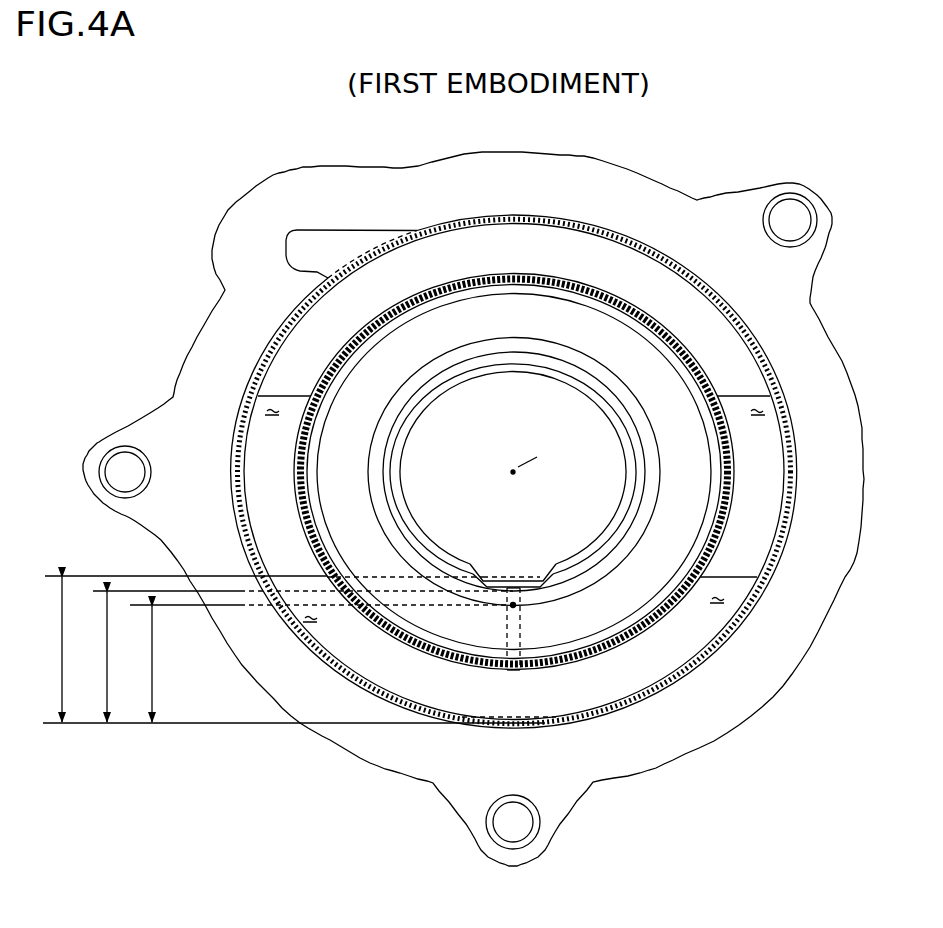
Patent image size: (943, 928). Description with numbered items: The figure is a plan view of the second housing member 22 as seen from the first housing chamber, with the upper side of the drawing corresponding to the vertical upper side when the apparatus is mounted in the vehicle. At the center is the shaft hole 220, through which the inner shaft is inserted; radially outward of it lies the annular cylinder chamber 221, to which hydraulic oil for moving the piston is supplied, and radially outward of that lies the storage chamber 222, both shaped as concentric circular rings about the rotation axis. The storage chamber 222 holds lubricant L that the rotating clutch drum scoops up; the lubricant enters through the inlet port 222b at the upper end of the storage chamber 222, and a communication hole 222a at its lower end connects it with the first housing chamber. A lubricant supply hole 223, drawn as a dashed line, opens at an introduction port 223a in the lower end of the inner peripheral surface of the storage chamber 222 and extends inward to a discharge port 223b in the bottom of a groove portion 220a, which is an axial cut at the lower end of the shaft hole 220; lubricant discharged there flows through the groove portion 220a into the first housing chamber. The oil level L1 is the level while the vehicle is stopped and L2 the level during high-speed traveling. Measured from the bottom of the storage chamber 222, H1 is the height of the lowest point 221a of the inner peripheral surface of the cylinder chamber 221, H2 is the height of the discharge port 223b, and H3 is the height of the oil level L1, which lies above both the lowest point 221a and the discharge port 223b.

The second housing member 22 is at (618, 163).
The storage chamber 222 is at (493, 252).
The communication hole 222a is at (546, 720).
The inlet port 222b is at (290, 247).
The cylinder chamber 221 is at (493, 318).
The lowest point of the inner peripheral surface of the cylinder chamber 221a is at (509, 606).
The shaft hole 220 is at (493, 412).
The groove portion 220a is at (534, 566).
The lubricant supply hole 223 is at (522, 635).
The introduction port 223a is at (515, 672).
The discharge port 223b is at (513, 586).
The lubricant L is at (693, 640).
The oil level while stopped L1 is at (725, 575).
The oil level during high-speed traveling L2 is at (745, 397).
The height of the lowest point of the cylinder chamber inner surface H1 is at (316, 663).
The height of the discharge port H2 is at (294, 656).
The height of the oil level H3 is at (287, 649).